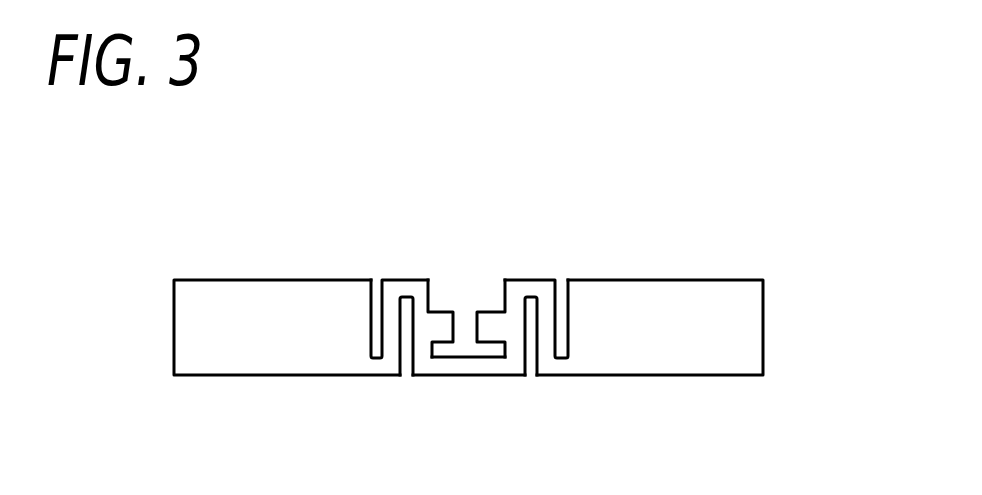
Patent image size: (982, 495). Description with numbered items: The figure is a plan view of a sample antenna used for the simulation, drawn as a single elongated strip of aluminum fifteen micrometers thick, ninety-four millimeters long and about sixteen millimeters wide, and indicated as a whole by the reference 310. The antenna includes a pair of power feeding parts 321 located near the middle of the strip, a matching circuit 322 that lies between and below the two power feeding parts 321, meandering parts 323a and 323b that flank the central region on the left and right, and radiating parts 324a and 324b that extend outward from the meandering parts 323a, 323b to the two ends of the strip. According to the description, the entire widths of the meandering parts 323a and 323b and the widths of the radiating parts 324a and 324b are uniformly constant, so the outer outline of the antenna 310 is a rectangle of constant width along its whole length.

The antenna substrate / circuit board 310 is at (525, 308).
The power feeding part 321 is at (490, 323).
The matching circuit 322 is at (510, 358).
The meandering part 323a is at (432, 275).
The meandering part 323b is at (567, 275).
The radiating part 324a is at (262, 280).
The radiating part 324b is at (655, 282).